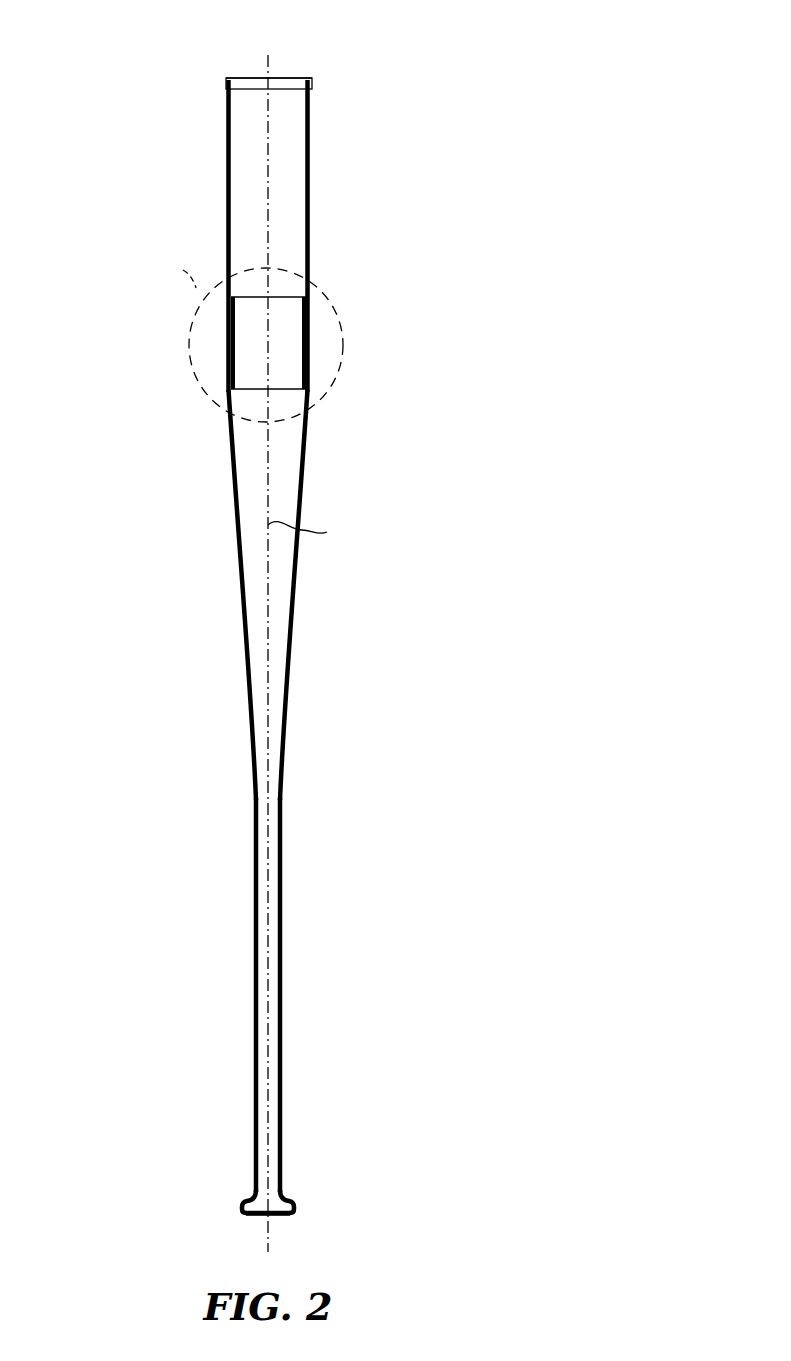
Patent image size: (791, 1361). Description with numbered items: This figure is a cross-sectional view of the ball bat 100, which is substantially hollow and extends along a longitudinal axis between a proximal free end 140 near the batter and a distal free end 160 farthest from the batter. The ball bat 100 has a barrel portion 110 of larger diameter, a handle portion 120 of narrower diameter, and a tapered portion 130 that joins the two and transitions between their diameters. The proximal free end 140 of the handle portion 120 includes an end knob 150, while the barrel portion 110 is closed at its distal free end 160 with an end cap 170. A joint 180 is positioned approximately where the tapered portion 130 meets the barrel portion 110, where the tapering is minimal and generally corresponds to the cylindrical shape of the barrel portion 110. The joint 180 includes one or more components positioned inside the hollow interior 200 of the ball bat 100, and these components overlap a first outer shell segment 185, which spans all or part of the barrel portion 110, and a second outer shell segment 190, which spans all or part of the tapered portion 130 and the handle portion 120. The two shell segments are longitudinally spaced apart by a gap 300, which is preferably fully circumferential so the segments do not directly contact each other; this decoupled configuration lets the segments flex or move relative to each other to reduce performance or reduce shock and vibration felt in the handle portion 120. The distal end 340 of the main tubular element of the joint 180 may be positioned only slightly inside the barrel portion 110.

The ball bat 100 is at (440, 84).
The barrel portion 110 is at (216, 88).
The handle portion 120 is at (216, 797).
The tapered portion 130 is at (216, 793).
The proximal free end 140 is at (296, 1228).
The end knob 150 is at (297, 1200).
The distal free end 160 is at (282, 66).
The end cap 170 is at (300, 78).
The joint 180 is at (322, 345).
The first outer shell segment 185 is at (151, 88).
The second outer shell segment 190 is at (151, 350).
The hollow interior 200 is at (301, 184).
The gap 300 is at (228, 351).
The distal end 340 is at (305, 296).